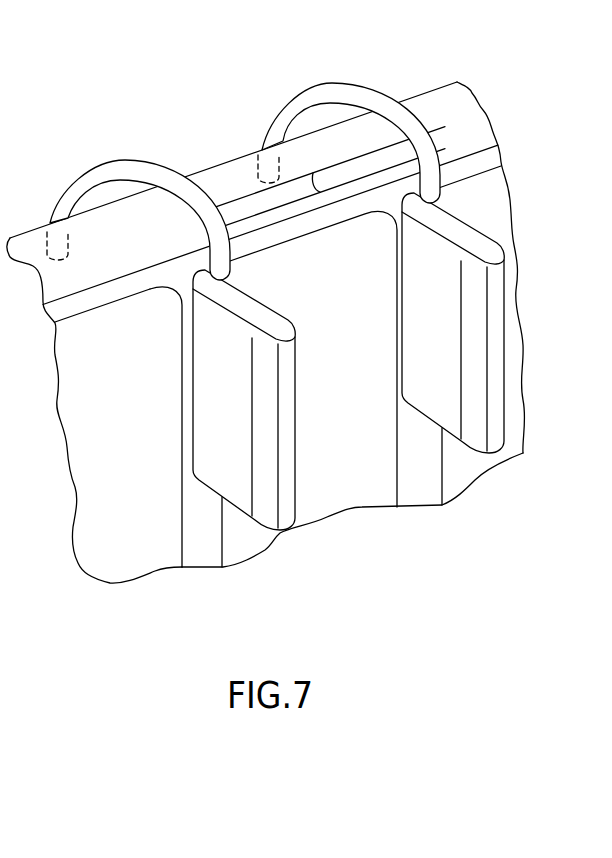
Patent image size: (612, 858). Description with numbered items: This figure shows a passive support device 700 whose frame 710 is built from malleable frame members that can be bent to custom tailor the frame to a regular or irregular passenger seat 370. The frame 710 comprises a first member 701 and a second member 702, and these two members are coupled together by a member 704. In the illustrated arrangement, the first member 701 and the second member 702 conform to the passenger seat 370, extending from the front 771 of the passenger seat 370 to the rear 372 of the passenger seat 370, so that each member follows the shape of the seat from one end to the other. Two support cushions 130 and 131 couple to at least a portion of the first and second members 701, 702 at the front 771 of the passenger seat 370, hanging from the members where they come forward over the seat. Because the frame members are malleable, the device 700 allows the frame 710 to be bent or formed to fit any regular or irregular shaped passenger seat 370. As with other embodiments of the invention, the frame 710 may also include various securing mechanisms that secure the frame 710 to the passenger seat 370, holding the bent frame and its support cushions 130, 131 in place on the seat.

The device 700 is at (254, 80).
The passenger seat 370 is at (441, 85).
The rear of passenger seat 372 is at (429, 104).
The member 704 is at (256, 199).
The frame 710 is at (140, 195).
The first member 701 is at (150, 164).
The second member 702 is at (381, 79).
The front of passenger seat 771 is at (213, 405).
The support cushion 131 is at (201, 353).
The support cushion 130 is at (477, 228).